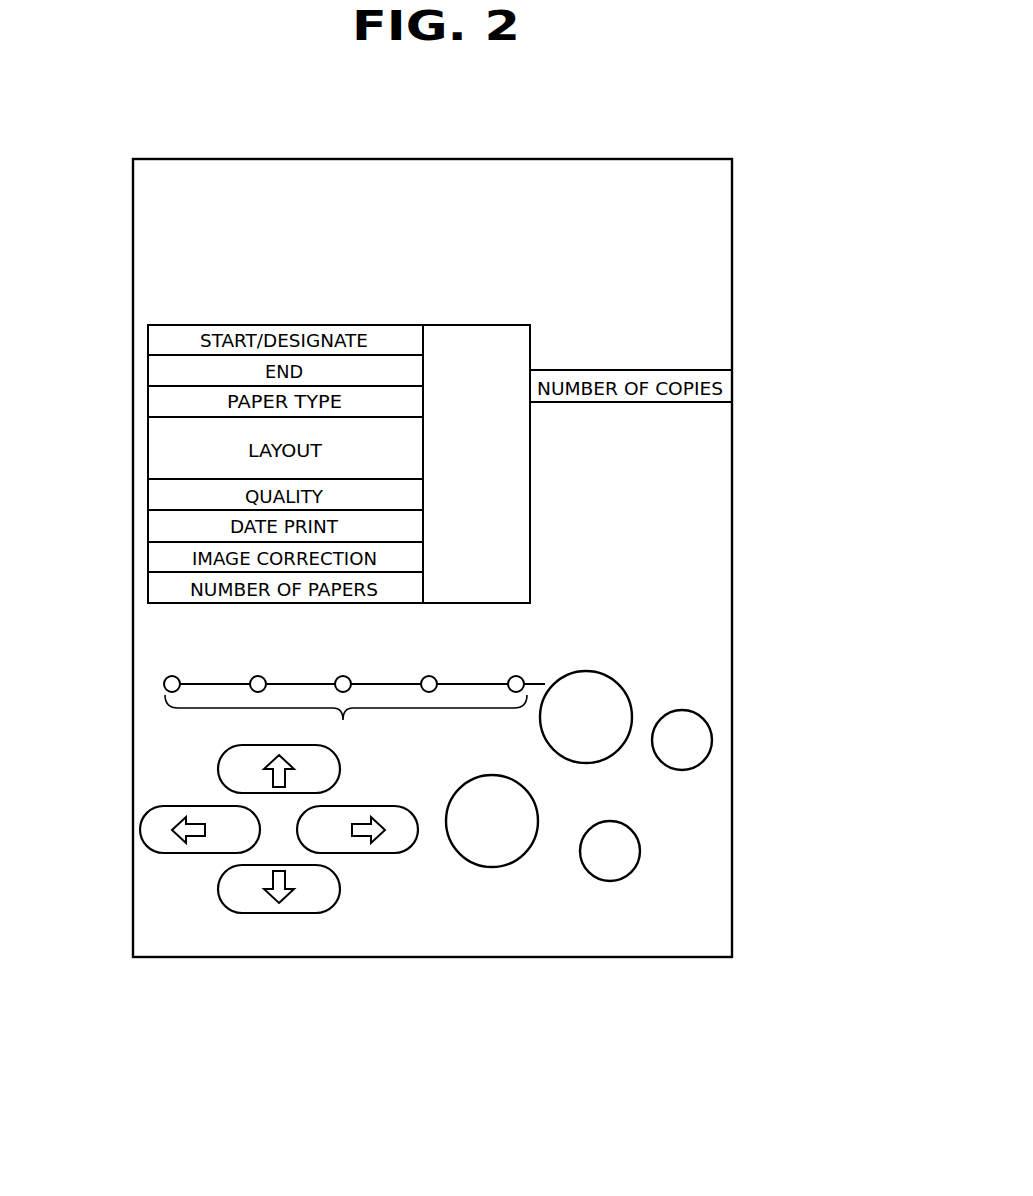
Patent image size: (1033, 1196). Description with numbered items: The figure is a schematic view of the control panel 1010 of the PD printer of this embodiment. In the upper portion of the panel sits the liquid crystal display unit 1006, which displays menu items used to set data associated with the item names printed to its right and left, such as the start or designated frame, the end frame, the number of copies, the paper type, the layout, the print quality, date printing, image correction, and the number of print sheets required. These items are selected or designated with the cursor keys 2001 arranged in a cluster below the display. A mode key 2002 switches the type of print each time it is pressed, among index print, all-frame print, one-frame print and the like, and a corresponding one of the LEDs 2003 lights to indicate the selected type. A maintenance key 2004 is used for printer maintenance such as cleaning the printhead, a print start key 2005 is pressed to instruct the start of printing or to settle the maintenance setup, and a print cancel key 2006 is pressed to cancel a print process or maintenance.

The control panel 1010 is at (627, 159).
The liquid crystal display unit 1006 is at (476, 325).
The cursor keys 2001 is at (203, 878).
The mode key 2002 is at (620, 707).
The LEDs 2003 is at (165, 710).
The maintenance key 2004 is at (705, 740).
The print start key 2005 is at (490, 855).
The print cancel key 2006 is at (612, 867).